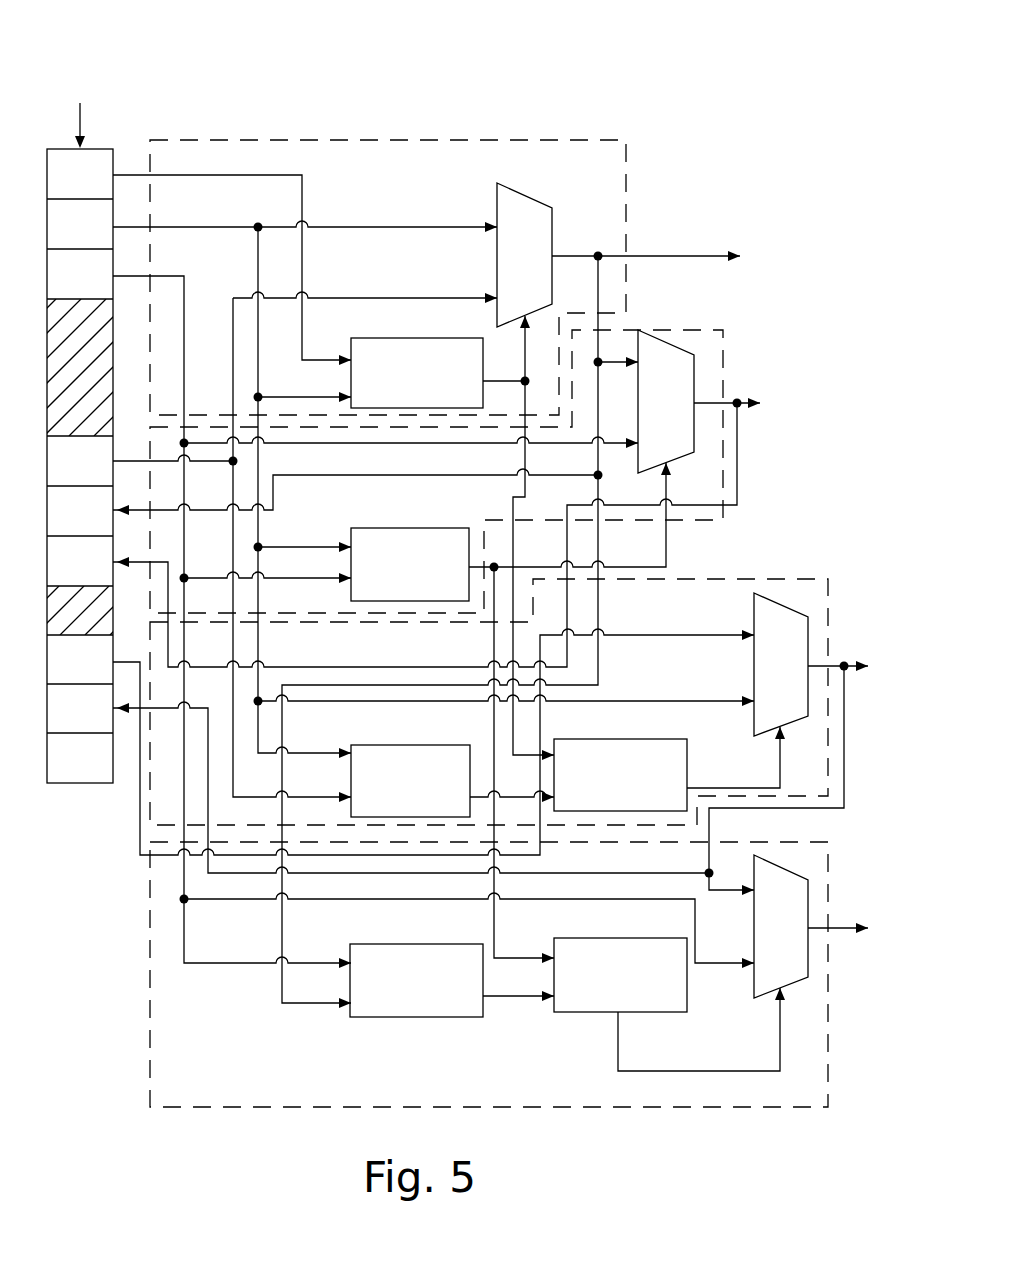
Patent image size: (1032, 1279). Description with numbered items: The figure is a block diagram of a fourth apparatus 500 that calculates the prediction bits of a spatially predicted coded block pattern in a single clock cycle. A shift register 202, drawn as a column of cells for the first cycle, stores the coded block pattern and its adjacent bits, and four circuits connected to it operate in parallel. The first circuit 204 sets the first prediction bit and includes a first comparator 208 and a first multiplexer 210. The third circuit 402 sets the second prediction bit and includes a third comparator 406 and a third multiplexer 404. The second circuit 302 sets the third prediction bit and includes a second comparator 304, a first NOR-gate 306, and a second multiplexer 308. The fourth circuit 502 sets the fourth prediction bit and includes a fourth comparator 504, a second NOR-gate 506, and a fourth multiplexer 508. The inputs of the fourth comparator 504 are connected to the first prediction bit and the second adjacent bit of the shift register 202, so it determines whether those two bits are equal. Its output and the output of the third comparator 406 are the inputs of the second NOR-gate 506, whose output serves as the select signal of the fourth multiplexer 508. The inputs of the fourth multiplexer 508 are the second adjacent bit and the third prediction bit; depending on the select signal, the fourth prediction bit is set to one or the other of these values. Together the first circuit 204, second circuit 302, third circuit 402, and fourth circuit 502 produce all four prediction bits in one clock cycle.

The fourth apparatus 500 is at (647, 80).
The shift register 202 is at (78, 785).
The first circuit 204 is at (628, 154).
The first comparator 208 is at (395, 338).
The first multiplexer 210 is at (522, 193).
The third circuit 402 is at (725, 370).
The third multiplexer 404 is at (665, 337).
The third comparator 406 is at (396, 528).
The second circuit 302 is at (831, 618).
The second comparator 304 is at (395, 745).
The first NOR-gate 306 is at (600, 739).
The second multiplexer 308 is at (780, 602).
The fourth circuit 502 is at (831, 890).
The fourth comparator 504 is at (395, 944).
The second NOR-gate 506 is at (600, 938).
The fourth multiplexer 508 is at (780, 866).